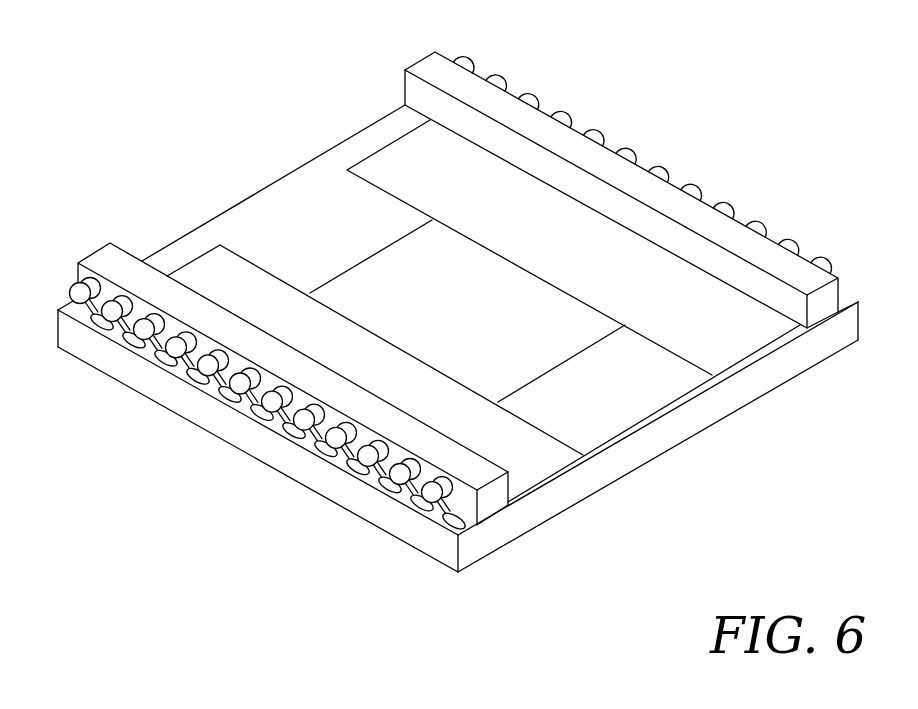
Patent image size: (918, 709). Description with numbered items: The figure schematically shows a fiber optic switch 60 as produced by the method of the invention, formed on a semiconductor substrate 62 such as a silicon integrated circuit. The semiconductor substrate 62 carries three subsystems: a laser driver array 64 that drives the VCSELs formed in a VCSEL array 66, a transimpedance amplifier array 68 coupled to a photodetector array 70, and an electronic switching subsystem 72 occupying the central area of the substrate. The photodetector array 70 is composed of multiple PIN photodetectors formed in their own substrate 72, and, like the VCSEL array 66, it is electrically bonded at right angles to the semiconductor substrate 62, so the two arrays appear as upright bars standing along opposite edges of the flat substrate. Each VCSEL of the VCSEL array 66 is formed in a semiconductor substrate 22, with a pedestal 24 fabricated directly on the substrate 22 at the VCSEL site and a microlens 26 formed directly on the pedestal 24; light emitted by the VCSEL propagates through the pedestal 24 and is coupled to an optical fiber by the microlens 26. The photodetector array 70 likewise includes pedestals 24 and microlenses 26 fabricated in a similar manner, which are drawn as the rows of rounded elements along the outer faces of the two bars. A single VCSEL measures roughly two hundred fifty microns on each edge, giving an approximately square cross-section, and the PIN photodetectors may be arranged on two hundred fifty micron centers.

The fiber optic switch 60 is at (462, 292).
The semiconductor substrate 62 is at (298, 197).
The semiconductor substrate 22 is at (137, 273).
The photodetector array 70 is at (473, 92).
The pedestal 24 is at (78, 266).
The microlens 26 is at (92, 325).
The laser driver array 64 is at (523, 450).
The VCSEL array 66 is at (492, 480).
The transimpedance amplifier array 68 is at (718, 333).
The electronic switching subsystem 72 is at (482, 322).